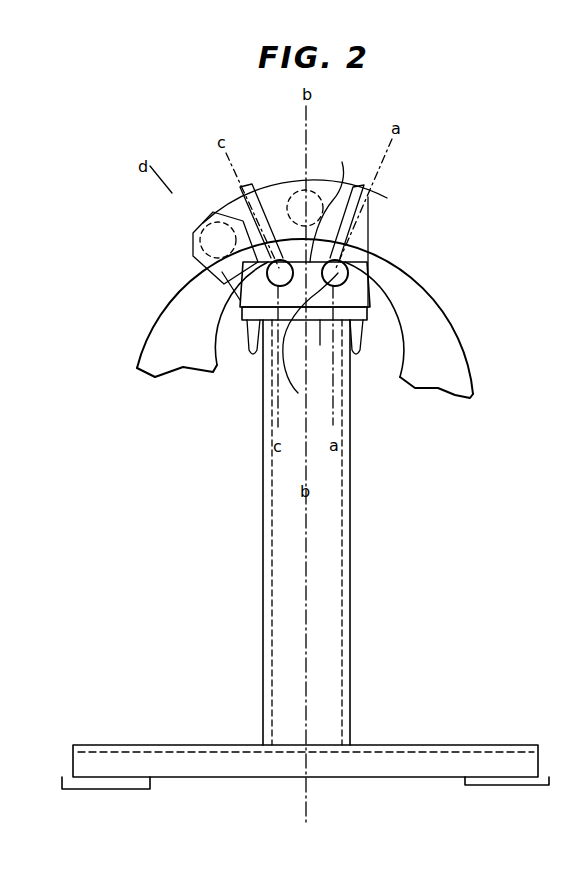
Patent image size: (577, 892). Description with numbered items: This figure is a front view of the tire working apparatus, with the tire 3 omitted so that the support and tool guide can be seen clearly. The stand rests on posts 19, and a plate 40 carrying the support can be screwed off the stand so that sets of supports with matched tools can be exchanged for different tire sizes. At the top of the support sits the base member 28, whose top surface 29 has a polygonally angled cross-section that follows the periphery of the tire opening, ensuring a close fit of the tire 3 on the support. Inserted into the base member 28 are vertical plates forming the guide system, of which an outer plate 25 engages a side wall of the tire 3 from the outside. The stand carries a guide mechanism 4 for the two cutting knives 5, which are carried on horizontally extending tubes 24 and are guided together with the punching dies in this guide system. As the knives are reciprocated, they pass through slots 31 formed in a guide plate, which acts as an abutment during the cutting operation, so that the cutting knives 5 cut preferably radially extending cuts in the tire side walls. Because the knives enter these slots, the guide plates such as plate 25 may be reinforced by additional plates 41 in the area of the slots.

The tire 3 is at (447, 387).
The guide mechanism 4 is at (190, 214).
The cutting knives 5 is at (240, 200).
The posts 19 is at (278, 513).
The tubes 24 is at (310, 343).
The vertical plate 25 is at (395, 215).
The base member 28 is at (364, 279).
The top surface 29 is at (328, 202).
The slots 31 is at (222, 272).
The plate 40 is at (328, 312).
The additional plates 41 is at (295, 200).